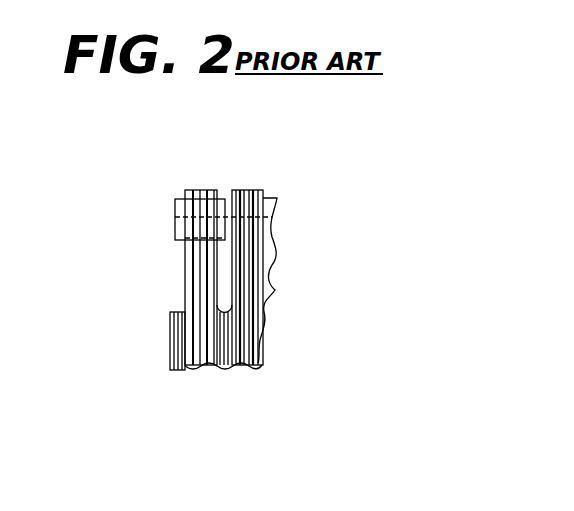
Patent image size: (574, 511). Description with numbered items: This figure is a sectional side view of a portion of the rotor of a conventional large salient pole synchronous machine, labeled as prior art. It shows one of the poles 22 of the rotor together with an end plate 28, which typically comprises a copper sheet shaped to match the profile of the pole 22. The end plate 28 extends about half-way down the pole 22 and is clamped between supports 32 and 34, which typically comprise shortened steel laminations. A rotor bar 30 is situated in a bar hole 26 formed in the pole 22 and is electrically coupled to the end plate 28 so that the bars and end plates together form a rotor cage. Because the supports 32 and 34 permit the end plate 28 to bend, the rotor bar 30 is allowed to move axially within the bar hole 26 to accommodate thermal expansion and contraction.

The pole 22 is at (278, 238).
The bar hole 26 is at (228, 200).
The end plate 28 is at (179, 272).
The rotor bar 30 is at (178, 199).
The support 32 is at (173, 338).
The support 34 is at (222, 367).